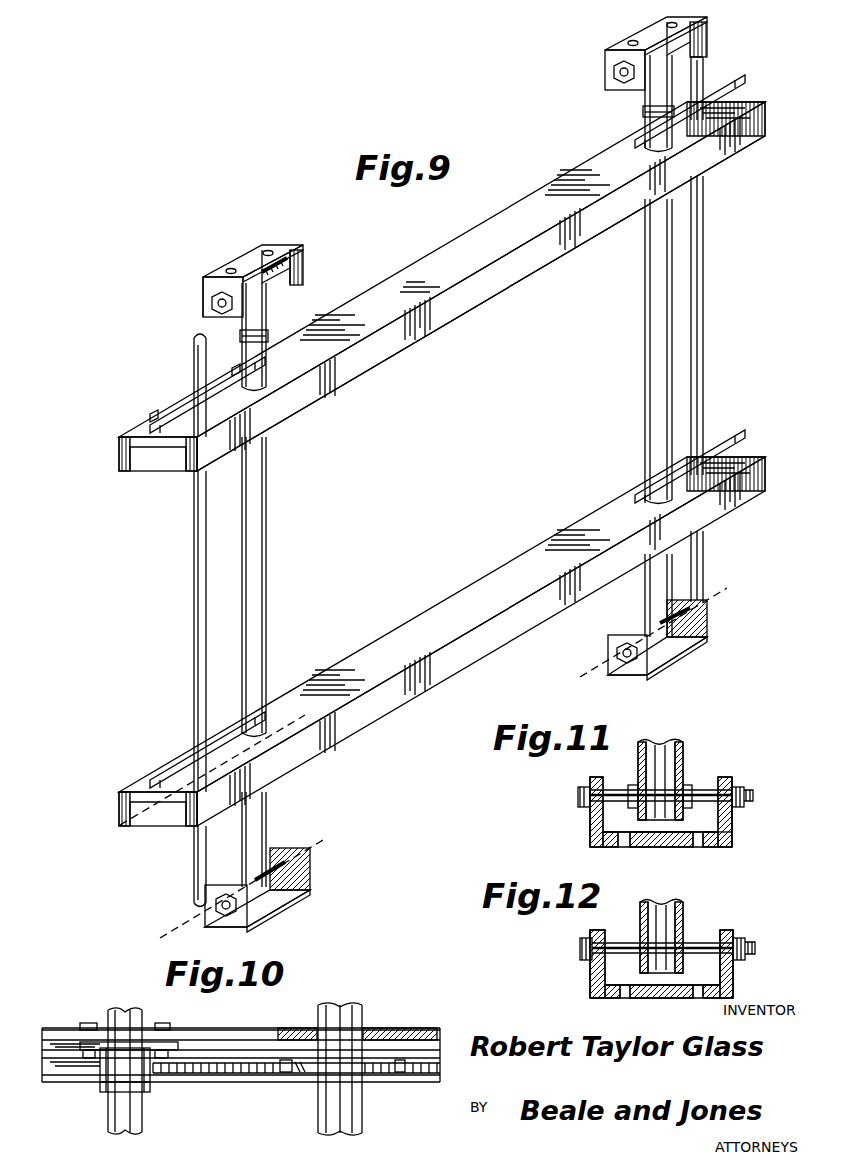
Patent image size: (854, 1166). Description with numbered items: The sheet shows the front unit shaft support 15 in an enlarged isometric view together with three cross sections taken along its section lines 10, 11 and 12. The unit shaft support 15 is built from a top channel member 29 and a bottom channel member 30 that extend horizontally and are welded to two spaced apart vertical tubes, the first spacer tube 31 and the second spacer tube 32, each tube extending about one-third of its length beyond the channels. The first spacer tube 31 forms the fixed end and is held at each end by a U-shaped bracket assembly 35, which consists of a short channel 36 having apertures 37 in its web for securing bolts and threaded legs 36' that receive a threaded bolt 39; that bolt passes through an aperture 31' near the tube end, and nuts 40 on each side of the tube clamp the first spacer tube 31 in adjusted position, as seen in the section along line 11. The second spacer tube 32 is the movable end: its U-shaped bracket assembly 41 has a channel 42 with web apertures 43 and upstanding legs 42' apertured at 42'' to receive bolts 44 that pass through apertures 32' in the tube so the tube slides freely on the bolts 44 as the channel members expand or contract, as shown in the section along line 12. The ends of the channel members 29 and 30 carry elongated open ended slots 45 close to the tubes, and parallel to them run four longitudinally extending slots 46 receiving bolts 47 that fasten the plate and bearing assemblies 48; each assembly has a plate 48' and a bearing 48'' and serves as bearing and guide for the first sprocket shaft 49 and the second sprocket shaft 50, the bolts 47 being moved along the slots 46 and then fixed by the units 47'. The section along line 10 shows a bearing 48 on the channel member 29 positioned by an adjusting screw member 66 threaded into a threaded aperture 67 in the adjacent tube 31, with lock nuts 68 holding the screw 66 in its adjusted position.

In FIG. 9, the section line 10— 10 is at (120, 825).
In FIG. 9, the section line 11— 11 is at (177, 932).
In FIG. 9, the section line 12— 12 is at (612, 676).
In FIG. 9, the front unit shaft support 15 is at (400, 282).
In FIG. 9, the top channel member 29 is at (392, 350).
In FIG. 10, the top channel member 29 is at (380, 1028).
In FIG. 9, the bottom channel member 30 is at (440, 665).
In FIG. 9, the first spacer tube 31 is at (271, 585).
In FIG. 10, the first spacer tube 31 is at (362, 1069).
In FIG. 11, the first spacer tube 31 is at (682, 773).
In FIG. 11, the aperture 31' is at (680, 781).
In FIG. 9, the second spacer tube 32 is at (633, 346).
In FIG. 12, the second spacer tube 32 is at (680, 929).
In FIG. 12, the aperture 32' is at (681, 937).
In FIG. 9, the U-shaped bracket assembly 35 is at (210, 272).
In FIG. 11, the U-shaped bracket assembly 35 is at (734, 813).
In FIG. 9, the channel 36 is at (239, 244).
In FIG. 11, the channel 36 is at (733, 849).
In FIG. 9, the legs 36' is at (253, 283).
In FIG. 11, the legs 36' is at (656, 800).
In FIG. 9, the apertures 37 is at (272, 250).
In FIG. 11, the apertures 37 is at (625, 847).
In FIG. 9, the threaded bolt 39 is at (280, 268).
In FIG. 11, the threaded bolt 39 is at (578, 793).
In FIG. 11, the nuts 40 is at (632, 785).
In FIG. 9, the U-shaped bracket assembly 41 is at (612, 48).
In FIG. 12, the U-shaped bracket assembly 41 is at (735, 930).
In FIG. 9, the channel 42 is at (629, 24).
In FIG. 12, the channel 42 is at (662, 1002).
In FIG. 12, the upstanding legs 42' is at (665, 964).
In FIG. 12, the apertures 42'' is at (703, 957).
In FIG. 9, the apertures 43 is at (680, 22).
In FIG. 12, the apertures 43 is at (625, 998).
In FIG. 12, the bolts 44 is at (622, 943).
In FIG. 9, the elongated open ended slots 45 is at (722, 102).
In FIG. 10, the elongated open ended slots 45 is at (245, 1035).
In FIG. 9, the longitudinally extending slots 46 is at (152, 416).
In FIG. 9, the bolts 47 is at (191, 386).
In FIG. 10, the bolts 47 is at (125, 1009).
In FIG. 10, the units 47' is at (101, 1076).
In FIG. 10, the plate and bearing assembly 48 is at (96, 1084).
In FIG. 10, the plate 48' is at (108, 1023).
In FIG. 10, the bearing 48'' is at (150, 1095).
In FIG. 9, the first sprocket shaft 49 is at (194, 600).
In FIG. 10, the first sprocket shaft 49 is at (110, 1118).
In FIG. 9, the second sprocket shaft 50 is at (705, 318).
In FIG. 10, the adjusting screw member 66 is at (230, 1073).
In FIG. 10, the threaded aperture 67 is at (300, 1075).
In FIG. 10, the lock nuts 68 is at (286, 1073).